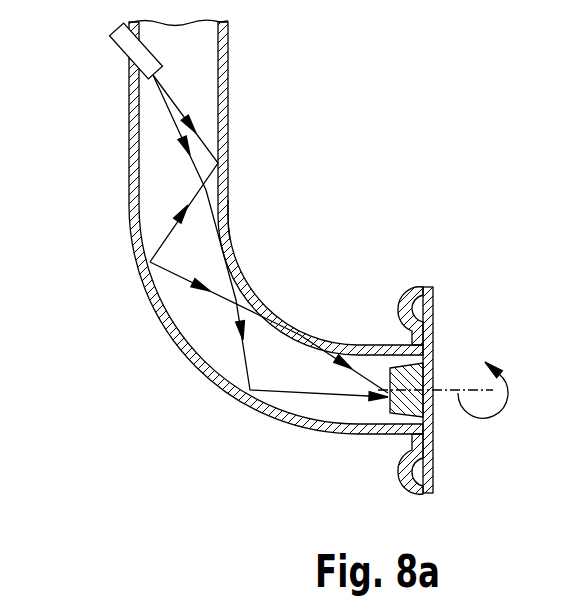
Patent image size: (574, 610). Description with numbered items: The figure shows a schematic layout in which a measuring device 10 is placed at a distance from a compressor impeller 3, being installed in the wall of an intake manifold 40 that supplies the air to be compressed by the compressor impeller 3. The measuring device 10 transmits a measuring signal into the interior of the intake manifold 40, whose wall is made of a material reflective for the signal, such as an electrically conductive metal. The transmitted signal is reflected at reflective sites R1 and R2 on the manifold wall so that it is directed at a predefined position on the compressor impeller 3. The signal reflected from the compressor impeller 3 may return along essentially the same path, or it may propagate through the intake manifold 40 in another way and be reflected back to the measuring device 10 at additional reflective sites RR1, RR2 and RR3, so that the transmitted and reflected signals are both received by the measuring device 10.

The measuring device 10 is at (121, 48).
The intake manifold 40 is at (230, 92).
The compressor impeller 3 is at (425, 368).
The reflective site RR3 is at (219, 163).
The reflective site R1 is at (229, 233).
The reflective site RR2 is at (148, 262).
The reflective site RR1 is at (303, 333).
The reflective site R2 is at (247, 392).